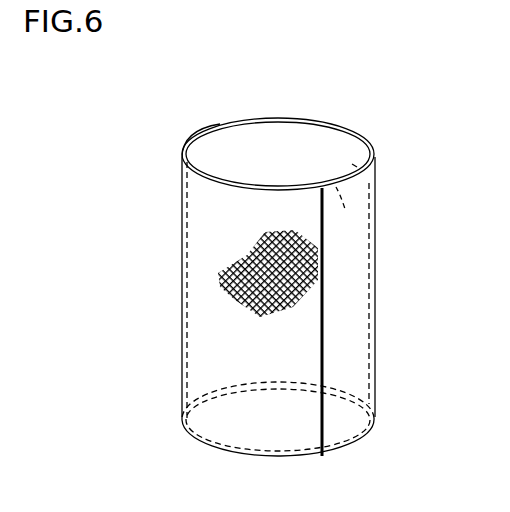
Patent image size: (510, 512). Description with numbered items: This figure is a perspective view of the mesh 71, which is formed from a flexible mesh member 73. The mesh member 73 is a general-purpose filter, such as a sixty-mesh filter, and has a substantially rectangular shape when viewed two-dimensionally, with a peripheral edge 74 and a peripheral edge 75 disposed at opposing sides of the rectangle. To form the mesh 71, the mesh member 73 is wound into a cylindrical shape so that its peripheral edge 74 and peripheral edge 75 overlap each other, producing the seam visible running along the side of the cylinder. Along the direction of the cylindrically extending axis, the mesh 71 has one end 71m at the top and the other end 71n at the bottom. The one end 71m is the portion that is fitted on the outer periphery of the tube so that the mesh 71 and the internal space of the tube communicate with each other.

The mesh 71 is at (170, 135).
The one end of mesh 71m is at (183, 160).
The other end of mesh 71n is at (185, 408).
The mesh member 73 is at (275, 118).
The peripheral edge 74 is at (348, 245).
The peripheral edge 75 is at (340, 177).